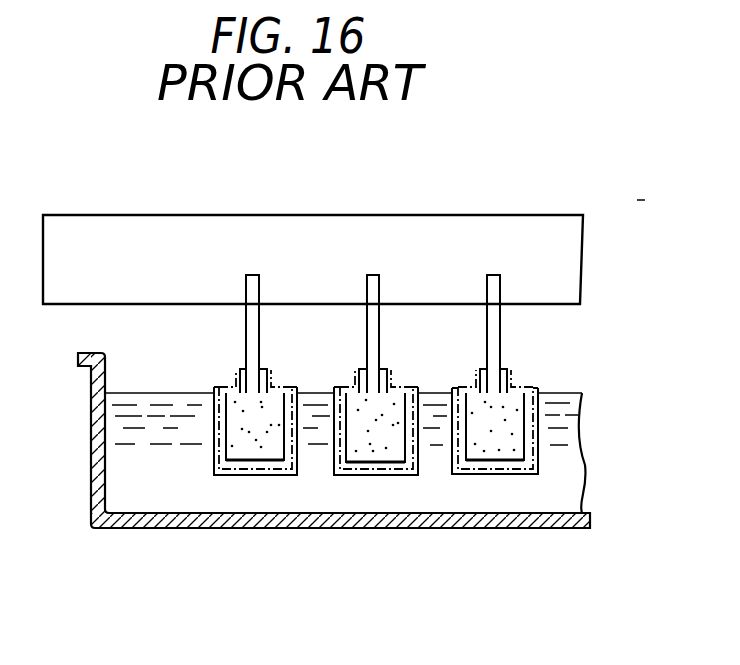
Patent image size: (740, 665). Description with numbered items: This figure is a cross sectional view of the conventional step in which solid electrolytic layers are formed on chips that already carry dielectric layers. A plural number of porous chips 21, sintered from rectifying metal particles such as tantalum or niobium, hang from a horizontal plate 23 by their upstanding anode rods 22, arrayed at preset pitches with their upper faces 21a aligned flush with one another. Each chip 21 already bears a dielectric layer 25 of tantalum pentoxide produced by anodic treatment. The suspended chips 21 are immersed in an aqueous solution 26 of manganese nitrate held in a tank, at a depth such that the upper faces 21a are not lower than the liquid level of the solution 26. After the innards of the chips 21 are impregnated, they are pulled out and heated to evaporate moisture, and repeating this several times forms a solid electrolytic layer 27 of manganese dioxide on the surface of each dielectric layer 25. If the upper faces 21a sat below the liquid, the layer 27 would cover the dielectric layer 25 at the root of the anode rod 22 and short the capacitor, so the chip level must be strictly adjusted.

The horizontal plate 23 is at (165, 232).
The anode rod 22 is at (258, 294).
The upper face of chip 21a is at (388, 380).
The porous chip 21 is at (250, 450).
The dielectric layer 25 is at (283, 468).
The solid electrolytic layer 27 is at (265, 475).
The manganese nitrate aqueous solution 26 is at (147, 493).